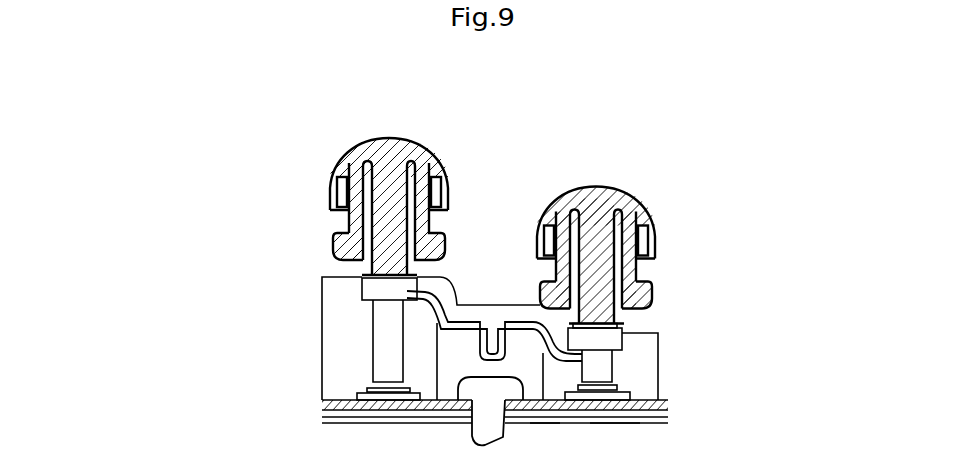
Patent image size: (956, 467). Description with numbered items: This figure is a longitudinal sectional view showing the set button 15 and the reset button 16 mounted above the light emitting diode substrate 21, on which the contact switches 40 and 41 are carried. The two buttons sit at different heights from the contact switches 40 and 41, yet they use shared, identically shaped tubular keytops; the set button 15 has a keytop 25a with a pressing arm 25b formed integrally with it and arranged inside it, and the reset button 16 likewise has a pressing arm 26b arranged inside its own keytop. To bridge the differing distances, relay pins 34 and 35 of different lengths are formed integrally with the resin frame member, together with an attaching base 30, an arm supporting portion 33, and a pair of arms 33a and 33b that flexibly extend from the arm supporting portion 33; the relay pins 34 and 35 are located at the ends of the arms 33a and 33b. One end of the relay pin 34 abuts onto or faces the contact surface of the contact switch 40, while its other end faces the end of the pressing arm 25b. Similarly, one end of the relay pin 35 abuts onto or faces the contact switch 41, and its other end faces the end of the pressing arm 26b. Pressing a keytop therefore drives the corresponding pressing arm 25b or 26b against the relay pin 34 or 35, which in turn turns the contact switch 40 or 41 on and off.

The set button 15 is at (356, 187).
The reset button 16 is at (648, 215).
The keytop 25a is at (337, 166).
The pressing arm 25b is at (370, 238).
The pressing arm 26b is at (691, 284).
The attaching base 30 is at (348, 331).
The arm supporting portion 33 is at (493, 341).
The arm 33a is at (432, 403).
The arm 33b is at (549, 424).
The relay pin 34 is at (387, 342).
The relay pin 35 is at (602, 366).
The contact switch 40 is at (363, 390).
The contact switch 41 is at (613, 421).
The light emitting diode substrate 21 is at (387, 425).